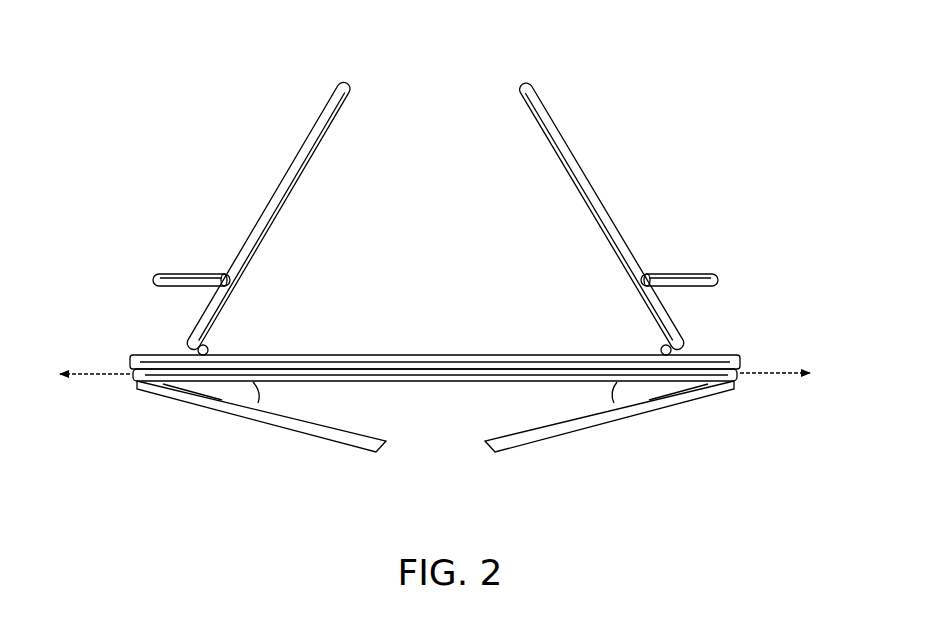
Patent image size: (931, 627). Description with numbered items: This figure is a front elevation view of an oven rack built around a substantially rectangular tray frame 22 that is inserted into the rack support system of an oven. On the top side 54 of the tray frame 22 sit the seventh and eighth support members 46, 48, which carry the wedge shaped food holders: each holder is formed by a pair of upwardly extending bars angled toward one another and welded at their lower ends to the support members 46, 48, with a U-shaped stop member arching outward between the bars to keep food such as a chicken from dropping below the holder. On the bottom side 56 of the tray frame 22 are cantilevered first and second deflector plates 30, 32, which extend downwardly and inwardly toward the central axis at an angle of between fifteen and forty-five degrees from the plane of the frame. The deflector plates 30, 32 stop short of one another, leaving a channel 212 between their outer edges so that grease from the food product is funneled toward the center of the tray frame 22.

The tray frame 22 is at (196, 87).
The top side 54 is at (460, 66).
The seventh support member 46 is at (211, 347).
The eighth support member 48 is at (659, 345).
The first deflector plate 30 is at (285, 432).
The second deflector plate 32 is at (590, 430).
The bottom side 56 is at (365, 470).
The channel 212 is at (450, 470).